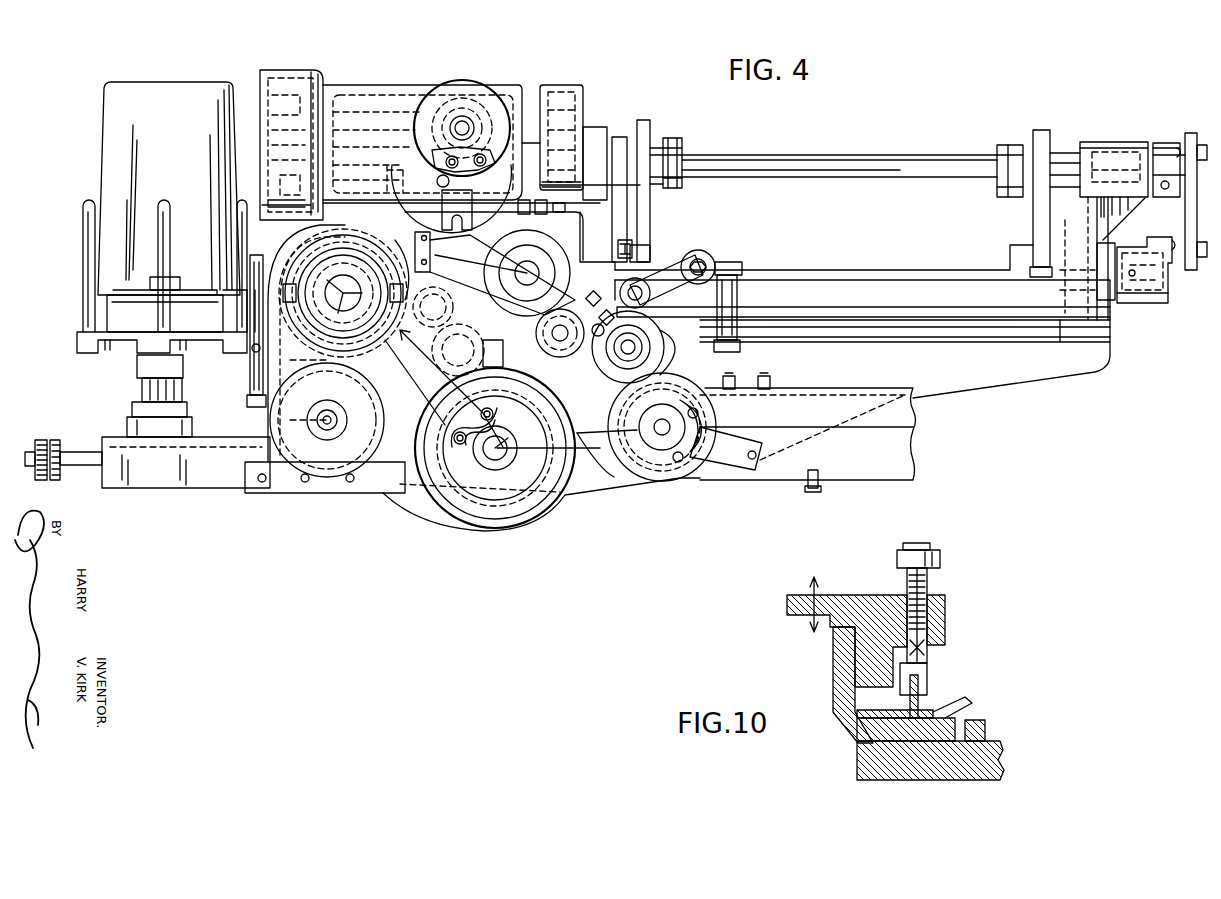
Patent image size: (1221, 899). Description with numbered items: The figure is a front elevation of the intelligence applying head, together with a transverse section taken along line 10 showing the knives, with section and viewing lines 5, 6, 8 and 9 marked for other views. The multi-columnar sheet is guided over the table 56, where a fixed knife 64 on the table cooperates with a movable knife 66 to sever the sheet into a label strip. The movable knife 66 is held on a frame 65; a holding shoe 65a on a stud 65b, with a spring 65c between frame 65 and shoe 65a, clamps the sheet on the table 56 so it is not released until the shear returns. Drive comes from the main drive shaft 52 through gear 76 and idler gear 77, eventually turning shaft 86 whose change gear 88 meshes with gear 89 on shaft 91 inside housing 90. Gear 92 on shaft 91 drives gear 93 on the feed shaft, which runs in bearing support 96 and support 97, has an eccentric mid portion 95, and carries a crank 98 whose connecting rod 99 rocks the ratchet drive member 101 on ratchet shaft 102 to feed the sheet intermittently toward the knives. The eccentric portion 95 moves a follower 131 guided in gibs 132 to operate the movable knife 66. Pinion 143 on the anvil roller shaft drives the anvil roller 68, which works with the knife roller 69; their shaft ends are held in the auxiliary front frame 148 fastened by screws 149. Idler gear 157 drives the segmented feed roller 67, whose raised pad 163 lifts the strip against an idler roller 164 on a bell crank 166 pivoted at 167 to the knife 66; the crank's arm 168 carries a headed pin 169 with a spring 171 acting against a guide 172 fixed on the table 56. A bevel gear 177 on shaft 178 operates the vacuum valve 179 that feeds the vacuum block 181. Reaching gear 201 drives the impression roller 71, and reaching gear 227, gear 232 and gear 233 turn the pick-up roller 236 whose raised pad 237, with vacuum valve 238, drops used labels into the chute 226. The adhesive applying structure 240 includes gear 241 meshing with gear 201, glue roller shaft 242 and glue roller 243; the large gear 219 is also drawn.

In FIG. 4, the section line 5- 5 is at (233, 58).
In FIG. 4, the section line 6- 6 is at (1076, 439).
In FIG. 4, the view arrow 8 is at (260, 291).
In FIG. 4, the view arrow 9 is at (204, 299).
In FIG. 4, the section line 10- 10 is at (881, 361).
In FIG. 4, the main drive shaft 52 is at (300, 250).
In FIG. 4, the table 56 is at (968, 332).
In FIG. 10, the table 56 is at (950, 770).
In FIG. 10, the fixed knife 64 is at (852, 735).
In FIG. 10, the frame 65 is at (948, 622).
In FIG. 10, the holding shoe 65a is at (962, 698).
In FIG. 10, the stud 65b is at (928, 612).
In FIG. 10, the spring 65c is at (930, 660).
In FIG. 4, the movable knife 66 is at (925, 285).
In FIG. 10, the movable knife 66 is at (835, 682).
In FIG. 4, the segmented feed roller 67 is at (615, 452).
In FIG. 4, the anvil roller 68 is at (591, 293).
In FIG. 4, the knife roller 69 is at (565, 262).
In FIG. 4, the impression roller 71 is at (527, 527).
In FIG. 4, the gear 76 is at (322, 262).
In FIG. 4, the idler gear 77 is at (386, 258).
In FIG. 4, the shaft 86 is at (395, 105).
In FIG. 4, the change gear 88 is at (258, 190).
In FIG. 4, the gear 89 is at (273, 70).
In FIG. 4, the housing 90 is at (307, 72).
In FIG. 4, the shaft 91 is at (343, 108).
In FIG. 4, the gear 92 is at (585, 95).
In FIG. 4, the gear 93 is at (598, 130).
In FIG. 4, the eccentric mid portion 95 is at (832, 158).
In FIG. 4, the bearing support 96 is at (620, 140).
In FIG. 4, the support 97 is at (1110, 142).
In FIG. 4, the crank 98 is at (1168, 143).
In FIG. 4, the connecting rod 99 is at (1186, 210).
In FIG. 4, the ratchet drive member 101 is at (1178, 303).
In FIG. 4, the ratchet shaft 102 is at (1160, 312).
In FIG. 4, the follower 131 is at (652, 200).
In FIG. 4, the gibs 132 is at (675, 165).
In FIG. 4, the pinion 143 is at (506, 469).
In FIG. 4, the auxiliary front frame 148 is at (493, 410).
In FIG. 4, the screws 149 is at (495, 273).
In FIG. 4, the idler gear 157 is at (668, 355).
In FIG. 4, the raised pad 163 is at (742, 333).
In FIG. 4, the idler roller 164 is at (650, 287).
In FIG. 4, the bell crank 166 is at (736, 262).
In FIG. 4, the pivot 167 is at (710, 255).
In FIG. 4, the arm 168 is at (738, 266).
In FIG. 4, the headed pin 169 is at (805, 318).
In FIG. 4, the spring 171 is at (740, 300).
In FIG. 4, the guide 172 is at (745, 316).
In FIG. 4, the bevel gear 177 is at (462, 120).
In FIG. 4, the shaft 178 is at (476, 84).
In FIG. 4, the vacuum valve 179 is at (500, 115).
In FIG. 4, the vacuum block 181 is at (625, 262).
In FIG. 4, the reaching gear 201 is at (390, 470).
In FIG. 4, the large gear 219 is at (487, 490).
In FIG. 4, the chute 226 is at (900, 460).
In FIG. 4, the reaching gear 227 is at (555, 510).
In FIG. 4, the gear 232 is at (570, 497).
In FIG. 4, the gear 233 is at (630, 450).
In FIG. 4, the pick-up roller 236 is at (690, 483).
In FIG. 4, the raised pad 237 is at (733, 380).
In FIG. 4, the vacuum valve 238 is at (655, 450).
In FIG. 4, the adhesive applying structure 240 is at (92, 396).
In FIG. 4, the gear 241 is at (327, 432).
In FIG. 4, the glue roller shaft 242 is at (300, 445).
In FIG. 4, the glue roller 243 is at (250, 430).